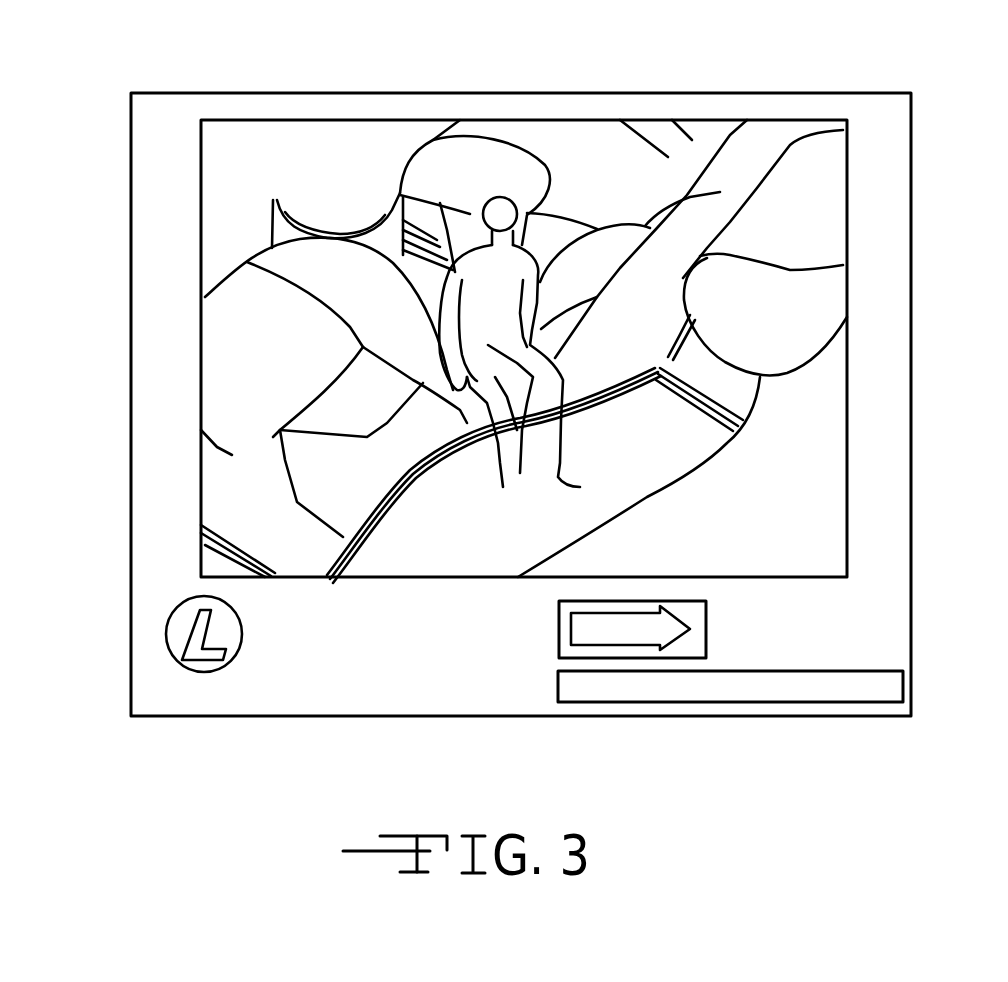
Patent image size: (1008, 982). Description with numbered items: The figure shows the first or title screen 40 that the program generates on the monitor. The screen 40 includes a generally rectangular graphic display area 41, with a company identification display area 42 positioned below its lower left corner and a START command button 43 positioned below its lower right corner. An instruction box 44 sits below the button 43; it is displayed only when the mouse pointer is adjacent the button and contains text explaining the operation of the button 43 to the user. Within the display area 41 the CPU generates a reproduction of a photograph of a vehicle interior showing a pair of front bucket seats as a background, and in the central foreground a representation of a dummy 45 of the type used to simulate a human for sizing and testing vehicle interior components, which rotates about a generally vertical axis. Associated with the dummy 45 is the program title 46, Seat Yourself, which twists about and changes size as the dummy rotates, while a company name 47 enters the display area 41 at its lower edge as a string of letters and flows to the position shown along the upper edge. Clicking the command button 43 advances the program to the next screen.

The title screen 40 is at (131, 388).
The graphic display area 41 is at (201, 272).
The company identification display area 42 is at (258, 682).
The START command button 43 is at (558, 642).
The instruction box 44 is at (690, 702).
The dummy 45 is at (425, 140).
The title 46 is at (232, 473).
The company name 47 is at (235, 148).